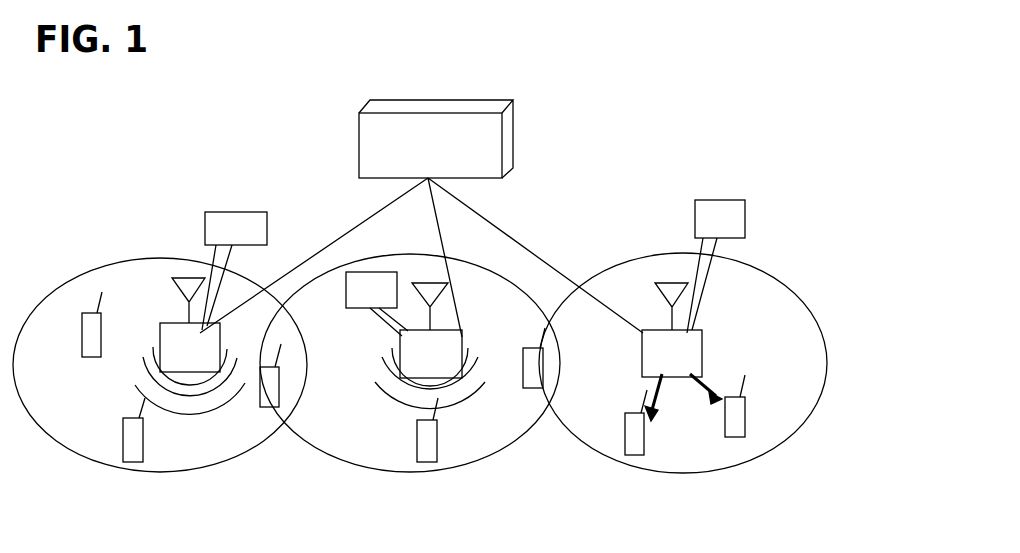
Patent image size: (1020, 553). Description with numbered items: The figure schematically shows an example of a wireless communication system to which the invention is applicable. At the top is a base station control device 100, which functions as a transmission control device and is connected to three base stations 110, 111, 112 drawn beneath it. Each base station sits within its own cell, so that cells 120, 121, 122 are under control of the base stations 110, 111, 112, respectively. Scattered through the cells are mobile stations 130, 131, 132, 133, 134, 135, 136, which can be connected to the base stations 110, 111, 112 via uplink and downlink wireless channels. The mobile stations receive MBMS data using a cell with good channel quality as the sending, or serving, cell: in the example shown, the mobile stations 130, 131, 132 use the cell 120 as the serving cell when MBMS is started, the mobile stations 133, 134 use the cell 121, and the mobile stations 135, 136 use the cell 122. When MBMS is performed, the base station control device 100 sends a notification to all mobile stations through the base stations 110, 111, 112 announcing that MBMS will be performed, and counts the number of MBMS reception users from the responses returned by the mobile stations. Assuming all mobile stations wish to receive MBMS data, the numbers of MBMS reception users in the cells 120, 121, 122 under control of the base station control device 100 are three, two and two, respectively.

The base station control device 100 is at (494, 104).
The base station 110 is at (173, 323).
The base station 111 is at (407, 330).
The base station 112 is at (650, 327).
The cell 120 is at (233, 455).
The cell 121 is at (473, 463).
The cell 122 is at (735, 462).
The mobile station 130 is at (82, 357).
The mobile station 131 is at (124, 456).
The mobile station 132 is at (260, 405).
The mobile station 133 is at (419, 462).
The mobile station 134 is at (527, 388).
The mobile station 135 is at (626, 457).
The mobile station 136 is at (745, 395).